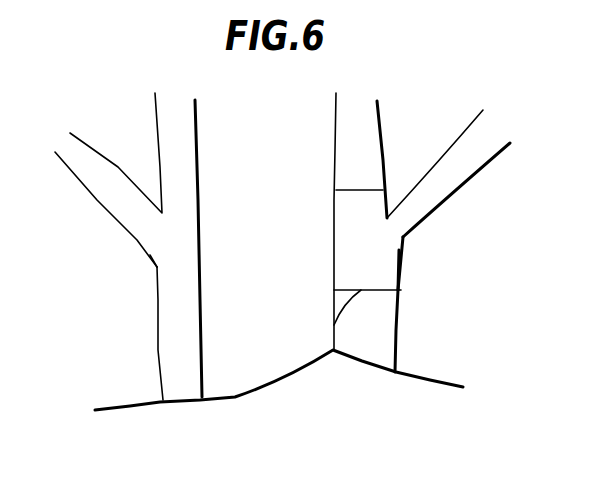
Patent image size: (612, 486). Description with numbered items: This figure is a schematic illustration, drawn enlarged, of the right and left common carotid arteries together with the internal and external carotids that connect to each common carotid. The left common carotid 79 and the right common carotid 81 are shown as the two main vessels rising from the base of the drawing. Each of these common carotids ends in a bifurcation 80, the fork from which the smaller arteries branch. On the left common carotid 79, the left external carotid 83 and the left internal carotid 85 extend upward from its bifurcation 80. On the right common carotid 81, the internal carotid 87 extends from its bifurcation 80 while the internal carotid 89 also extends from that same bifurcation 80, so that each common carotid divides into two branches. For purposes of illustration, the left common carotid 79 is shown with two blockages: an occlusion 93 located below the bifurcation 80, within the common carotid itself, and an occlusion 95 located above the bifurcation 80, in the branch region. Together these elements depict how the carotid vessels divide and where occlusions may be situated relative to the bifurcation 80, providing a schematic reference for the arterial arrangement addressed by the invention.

The left common carotid 79 is at (381, 333).
The bifurcation 80 is at (163, 242).
The right common carotid 81 is at (173, 347).
The left external carotid 83 is at (468, 157).
The left internal carotid 85 is at (368, 132).
The internal carotid 87 is at (127, 207).
The internal carotid 89 is at (182, 143).
The occlusion 93 is at (334, 325).
The occlusion 95 is at (368, 187).